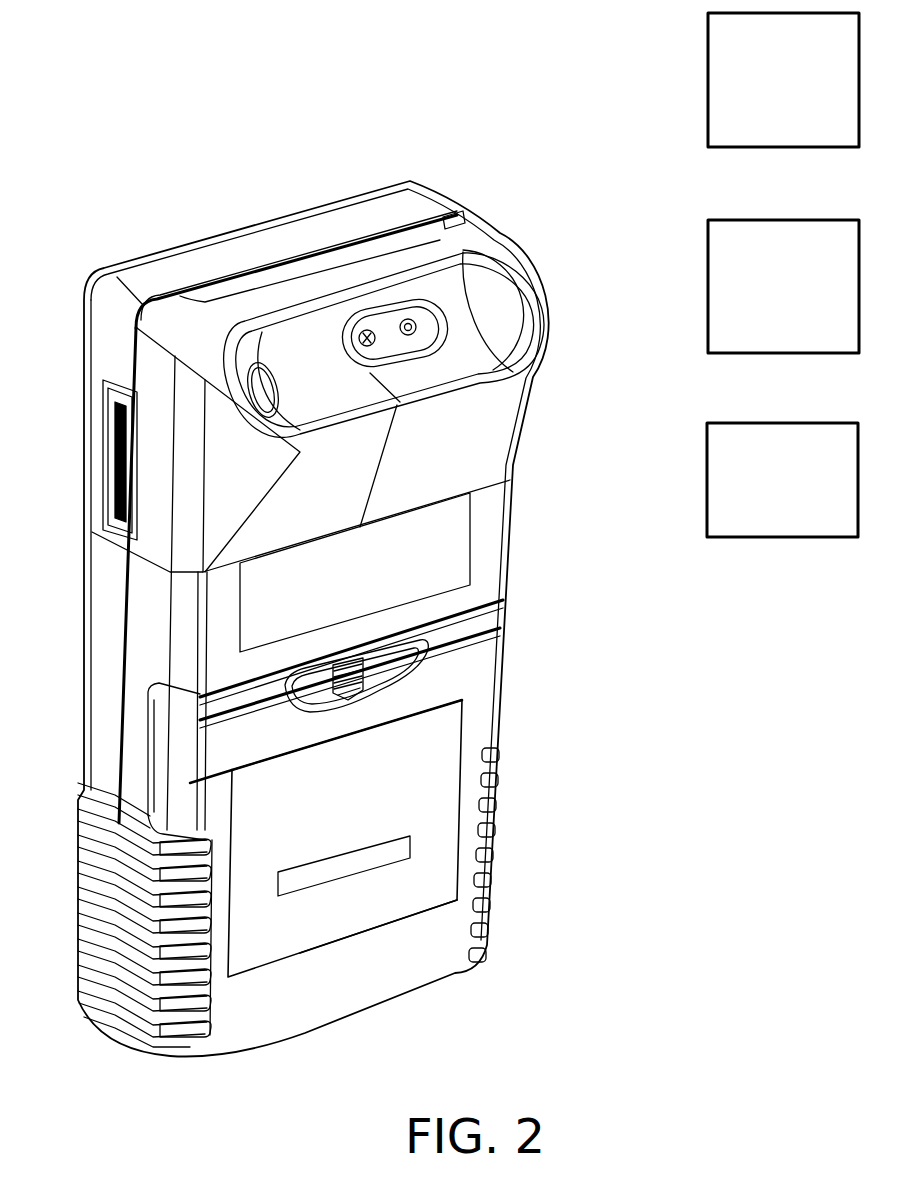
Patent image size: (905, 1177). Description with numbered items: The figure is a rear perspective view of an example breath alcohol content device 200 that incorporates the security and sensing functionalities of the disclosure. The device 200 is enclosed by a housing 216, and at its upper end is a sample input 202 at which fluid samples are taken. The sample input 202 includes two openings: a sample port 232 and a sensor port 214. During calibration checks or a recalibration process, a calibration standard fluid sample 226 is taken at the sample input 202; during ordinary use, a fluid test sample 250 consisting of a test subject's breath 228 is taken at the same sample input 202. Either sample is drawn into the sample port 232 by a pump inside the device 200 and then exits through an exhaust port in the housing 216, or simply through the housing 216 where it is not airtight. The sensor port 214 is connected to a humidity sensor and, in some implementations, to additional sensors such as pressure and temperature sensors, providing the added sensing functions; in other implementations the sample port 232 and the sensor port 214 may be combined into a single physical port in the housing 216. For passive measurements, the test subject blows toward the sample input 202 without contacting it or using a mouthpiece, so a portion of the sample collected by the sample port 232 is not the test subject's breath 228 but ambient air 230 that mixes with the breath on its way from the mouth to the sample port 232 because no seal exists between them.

The breath alcohol content device 200 is at (142, 188).
The sample input 202 is at (372, 300).
The sensor port 214 is at (413, 338).
The housing 216 is at (510, 560).
The calibration standard fluid sample 226 is at (448, 293).
The test subject's breath 228 is at (630, 388).
The ambient air 230 is at (630, 388).
The sample port 232 is at (363, 348).
The fluid test sample 250 is at (462, 343).